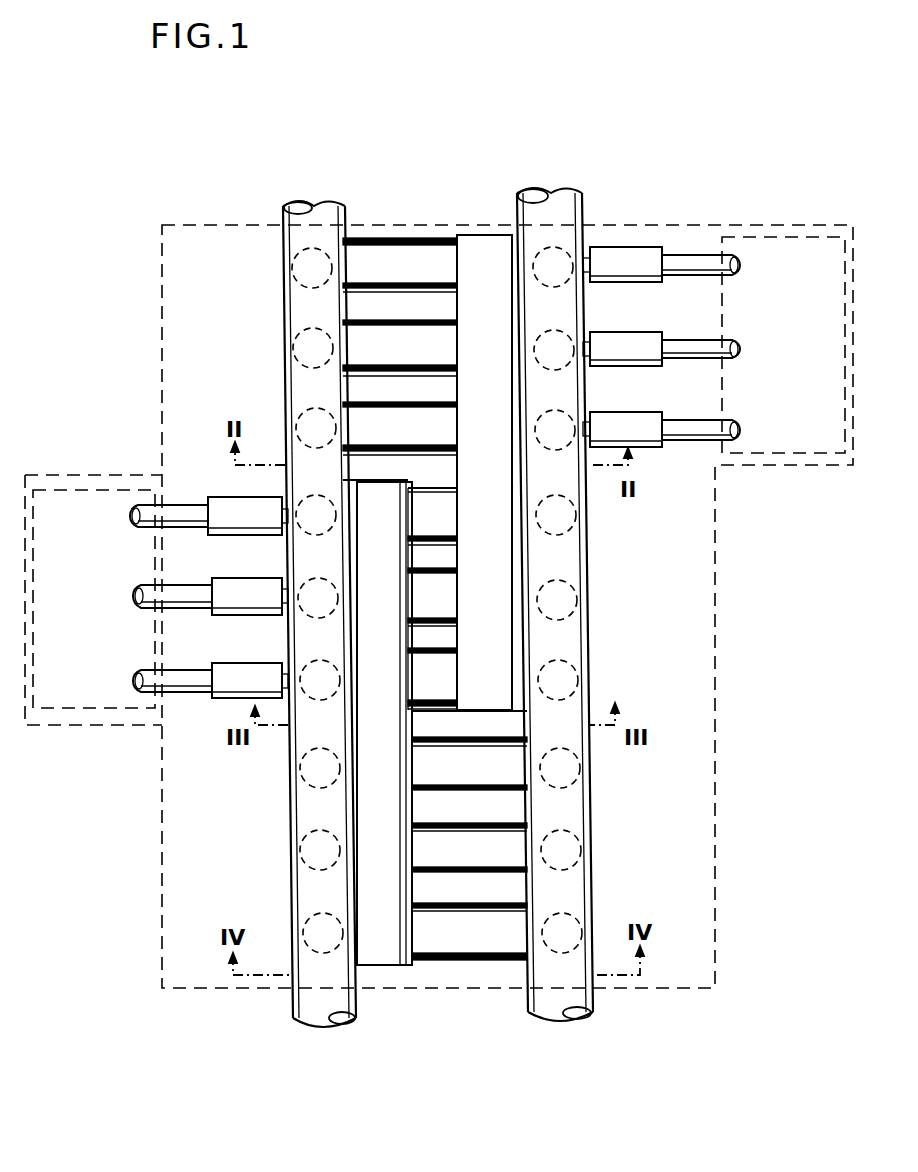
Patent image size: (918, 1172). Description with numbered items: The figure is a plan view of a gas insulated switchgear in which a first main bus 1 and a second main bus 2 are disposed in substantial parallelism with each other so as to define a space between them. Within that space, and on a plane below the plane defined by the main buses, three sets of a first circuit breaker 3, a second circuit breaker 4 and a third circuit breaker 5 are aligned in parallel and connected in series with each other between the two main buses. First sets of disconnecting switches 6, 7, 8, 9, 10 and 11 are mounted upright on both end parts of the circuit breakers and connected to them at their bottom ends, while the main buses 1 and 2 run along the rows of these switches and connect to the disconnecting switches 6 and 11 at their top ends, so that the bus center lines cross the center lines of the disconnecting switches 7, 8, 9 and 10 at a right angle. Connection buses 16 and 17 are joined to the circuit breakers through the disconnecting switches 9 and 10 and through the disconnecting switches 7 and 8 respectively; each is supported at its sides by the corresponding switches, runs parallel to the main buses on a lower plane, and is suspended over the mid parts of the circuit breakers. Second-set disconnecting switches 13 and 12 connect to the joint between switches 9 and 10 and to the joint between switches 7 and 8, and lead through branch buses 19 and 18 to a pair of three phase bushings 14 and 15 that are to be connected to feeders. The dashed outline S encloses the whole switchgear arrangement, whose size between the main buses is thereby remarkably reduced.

The first main bus 1 is at (583, 206).
The second main bus 2 is at (285, 207).
The first circuit breaker 3 is at (488, 960).
The second circuit breaker 4 is at (455, 527).
The third circuit breaker 5 is at (408, 238).
The disconnecting switch 6 is at (580, 773).
The disconnecting switch 7 is at (300, 790).
The disconnecting switch 8 is at (300, 498).
The disconnecting switch 9 is at (575, 518).
The disconnecting switch 10 is at (552, 245).
The disconnecting switch 11 is at (292, 268).
The disconnecting switch 12 is at (218, 497).
The disconnecting switch 13 is at (638, 258).
The three phase bushing 14 is at (783, 345).
The three phase bushing 15 is at (93, 600).
The connection bus 16 is at (470, 235).
The connection bus 17 is at (388, 965).
The branch bus 18 is at (708, 255).
The branch bus 19 is at (165, 505).
The switchgear enclosure S is at (715, 597).